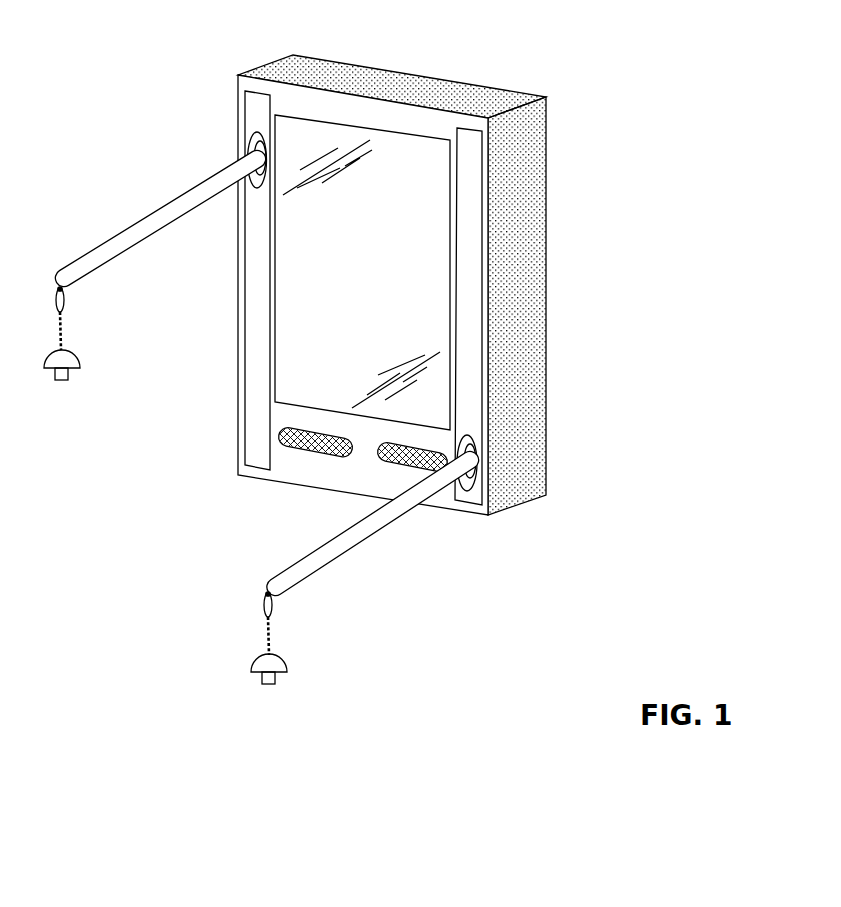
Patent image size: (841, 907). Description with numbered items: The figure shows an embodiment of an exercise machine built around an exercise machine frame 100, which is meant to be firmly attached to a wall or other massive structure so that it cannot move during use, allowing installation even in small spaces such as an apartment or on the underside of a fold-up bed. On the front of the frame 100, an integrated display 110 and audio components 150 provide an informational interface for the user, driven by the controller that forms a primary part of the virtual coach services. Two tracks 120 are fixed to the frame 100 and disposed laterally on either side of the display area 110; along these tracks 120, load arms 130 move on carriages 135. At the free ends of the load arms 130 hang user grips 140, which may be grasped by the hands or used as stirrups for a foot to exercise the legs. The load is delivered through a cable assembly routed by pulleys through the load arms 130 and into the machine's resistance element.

The exercise machine frame 100 is at (535, 170).
The integrated display 110 is at (418, 233).
The tracks 120 is at (257, 123).
The load arms 130 is at (135, 235).
The carriages 135 is at (252, 140).
The user grip 140 is at (62, 380).
The audio components 150 is at (302, 437).